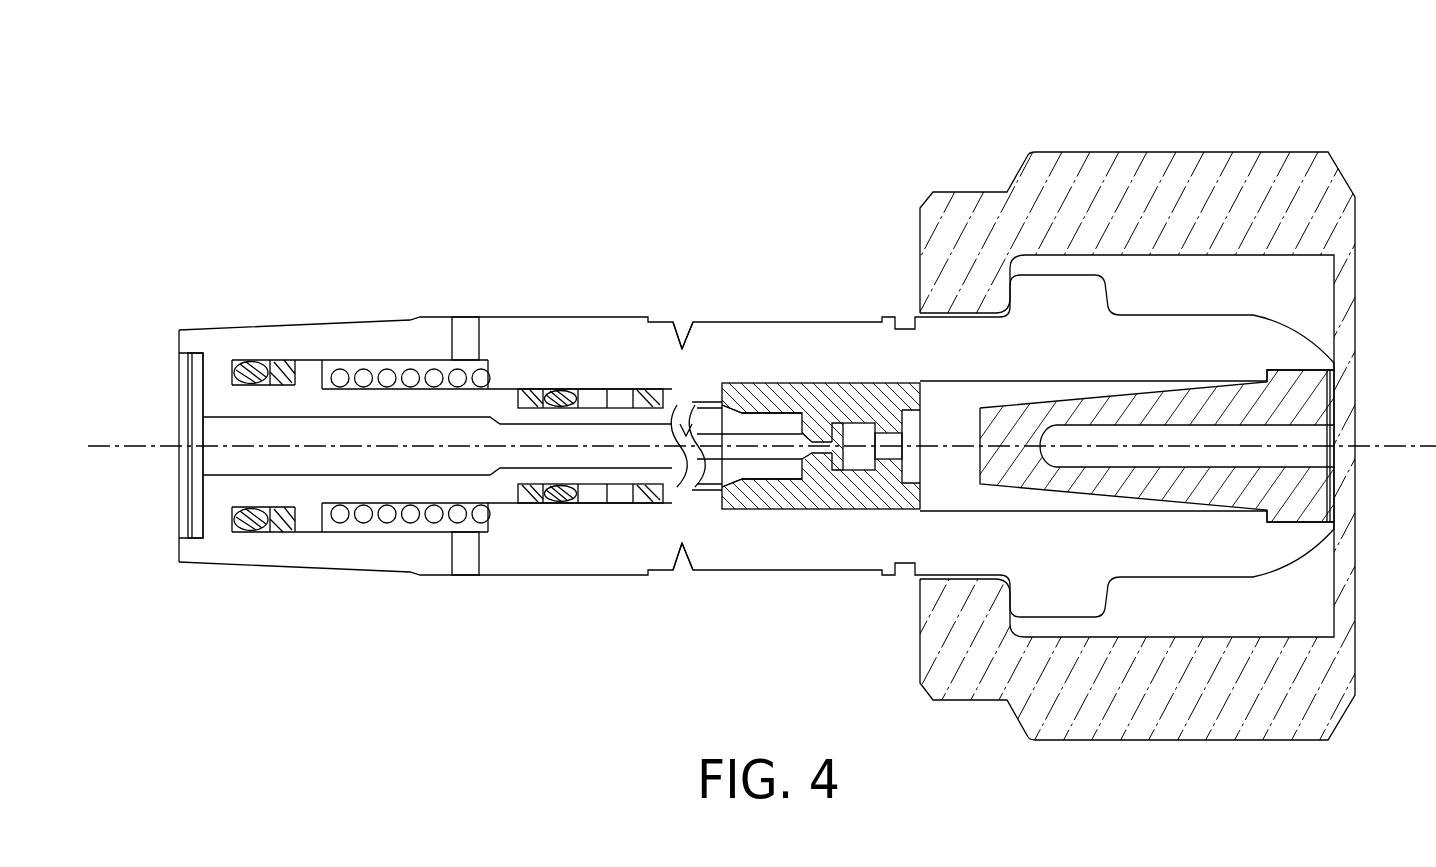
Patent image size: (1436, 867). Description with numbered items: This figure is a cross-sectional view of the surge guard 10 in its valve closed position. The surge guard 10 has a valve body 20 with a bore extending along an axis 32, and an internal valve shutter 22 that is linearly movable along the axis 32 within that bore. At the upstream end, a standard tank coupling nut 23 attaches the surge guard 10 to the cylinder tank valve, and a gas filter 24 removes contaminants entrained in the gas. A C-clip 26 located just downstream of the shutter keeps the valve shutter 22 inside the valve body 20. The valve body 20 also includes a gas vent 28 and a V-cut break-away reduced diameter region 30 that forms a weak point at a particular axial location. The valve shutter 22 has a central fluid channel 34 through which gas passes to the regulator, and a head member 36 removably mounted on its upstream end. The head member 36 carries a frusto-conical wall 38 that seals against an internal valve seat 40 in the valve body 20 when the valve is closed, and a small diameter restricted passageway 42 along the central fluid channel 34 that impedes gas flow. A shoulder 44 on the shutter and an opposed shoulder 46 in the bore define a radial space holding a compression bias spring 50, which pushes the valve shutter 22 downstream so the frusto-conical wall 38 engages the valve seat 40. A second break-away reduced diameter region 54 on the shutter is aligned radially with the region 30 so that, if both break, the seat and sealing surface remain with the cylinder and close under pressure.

The surge guard 10 is at (526, 165).
The valve body 20 is at (760, 322).
The valve shutter 22 is at (215, 520).
The tank coupling nut 23 is at (1223, 152).
The gas filter 24 is at (1315, 487).
The C-clip 26 is at (190, 497).
The gas vent 28 is at (465, 330).
The break-away reduced diameter region 30 is at (683, 345).
The axis 32 is at (95, 443).
The central fluid channel 34 is at (230, 437).
The head member 36 is at (840, 492).
The frusto-conical wall 38 is at (727, 503).
The internal valve seat 40 is at (720, 503).
The restricted passageway 42 is at (864, 426).
The shoulder 44 is at (318, 360).
The shoulder 46 is at (488, 373).
The bias spring 50 is at (352, 515).
The break-away reduced diameter region 54 is at (680, 485).